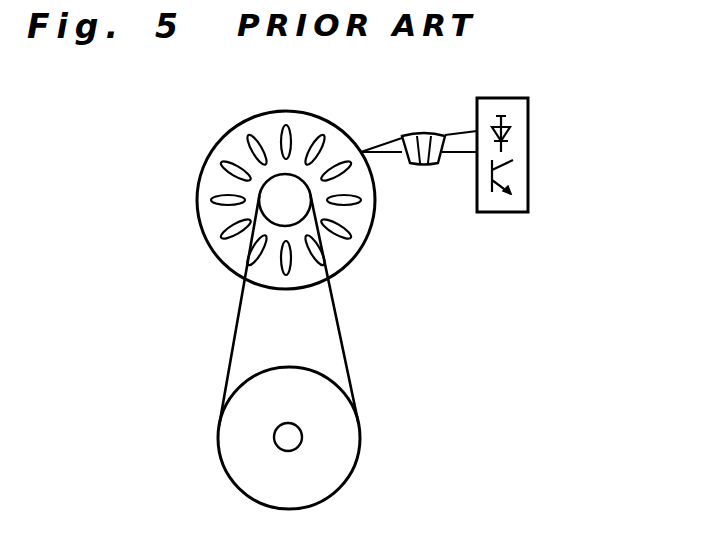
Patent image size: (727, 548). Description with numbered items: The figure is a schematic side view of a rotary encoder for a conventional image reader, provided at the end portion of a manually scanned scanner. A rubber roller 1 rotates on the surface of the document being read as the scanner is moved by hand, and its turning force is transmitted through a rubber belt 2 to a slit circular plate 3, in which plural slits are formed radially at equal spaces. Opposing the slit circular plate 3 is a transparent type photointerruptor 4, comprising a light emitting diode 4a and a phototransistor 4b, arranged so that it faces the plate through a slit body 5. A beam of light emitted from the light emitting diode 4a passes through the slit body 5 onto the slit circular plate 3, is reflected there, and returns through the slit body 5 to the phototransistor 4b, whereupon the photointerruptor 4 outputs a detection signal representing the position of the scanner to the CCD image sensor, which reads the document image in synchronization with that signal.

The rubber roller 1 is at (337, 433).
The rubber belt 2 is at (340, 317).
The slit circular plate 3 is at (213, 223).
The transparent type photointerruptor 4 is at (600, 93).
The light emitting diode 4a is at (504, 124).
The phototransistor 4b is at (506, 168).
The slit body 5 is at (422, 132).